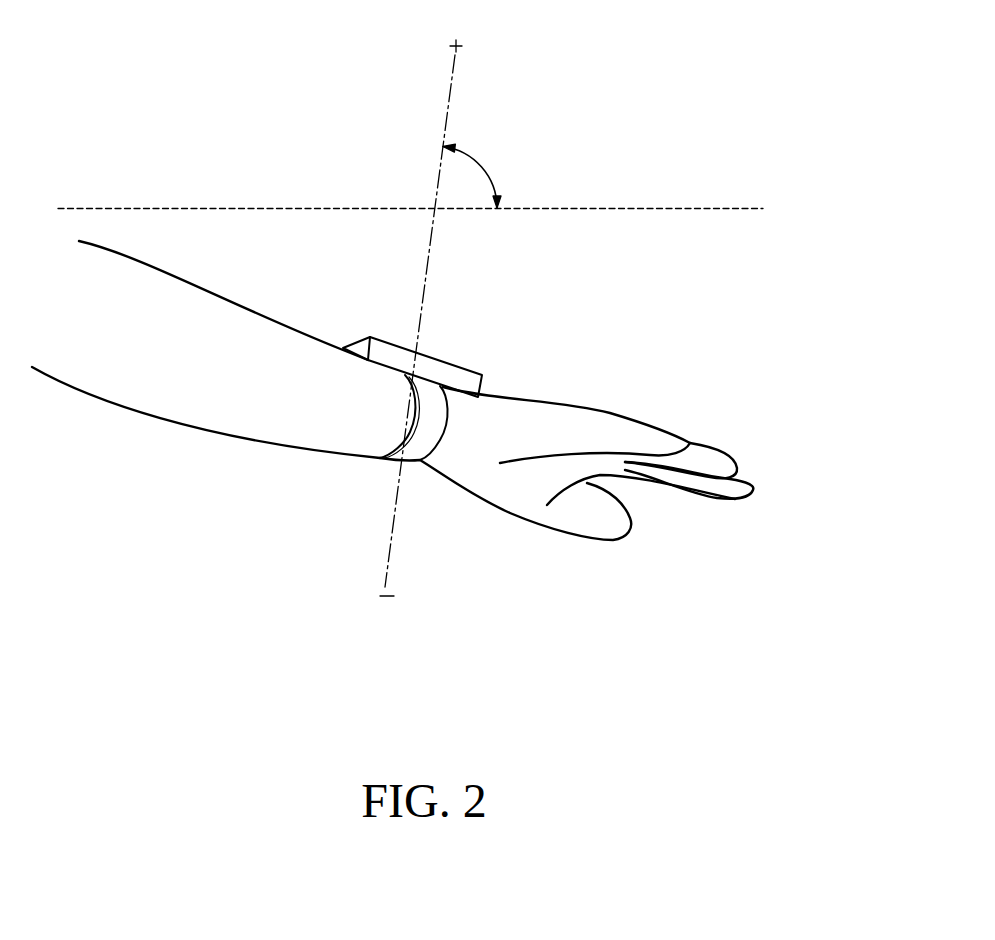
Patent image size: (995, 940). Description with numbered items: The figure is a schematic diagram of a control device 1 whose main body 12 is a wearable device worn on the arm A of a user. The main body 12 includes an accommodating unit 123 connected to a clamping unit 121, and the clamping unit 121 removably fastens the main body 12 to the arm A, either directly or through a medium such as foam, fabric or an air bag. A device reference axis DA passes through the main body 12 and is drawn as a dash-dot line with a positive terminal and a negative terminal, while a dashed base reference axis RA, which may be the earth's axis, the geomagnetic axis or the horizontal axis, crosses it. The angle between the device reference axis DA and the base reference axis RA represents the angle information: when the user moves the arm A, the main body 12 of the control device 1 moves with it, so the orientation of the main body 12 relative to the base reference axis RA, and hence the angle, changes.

The control device 1 is at (460, 356).
The main body 12 is at (460, 365).
The clamping unit 121 is at (432, 430).
The accommodating unit 123 is at (457, 362).
The arm A is at (243, 405).
The device reference axis DA is at (440, 318).
The base reference axis RA is at (430, 210).